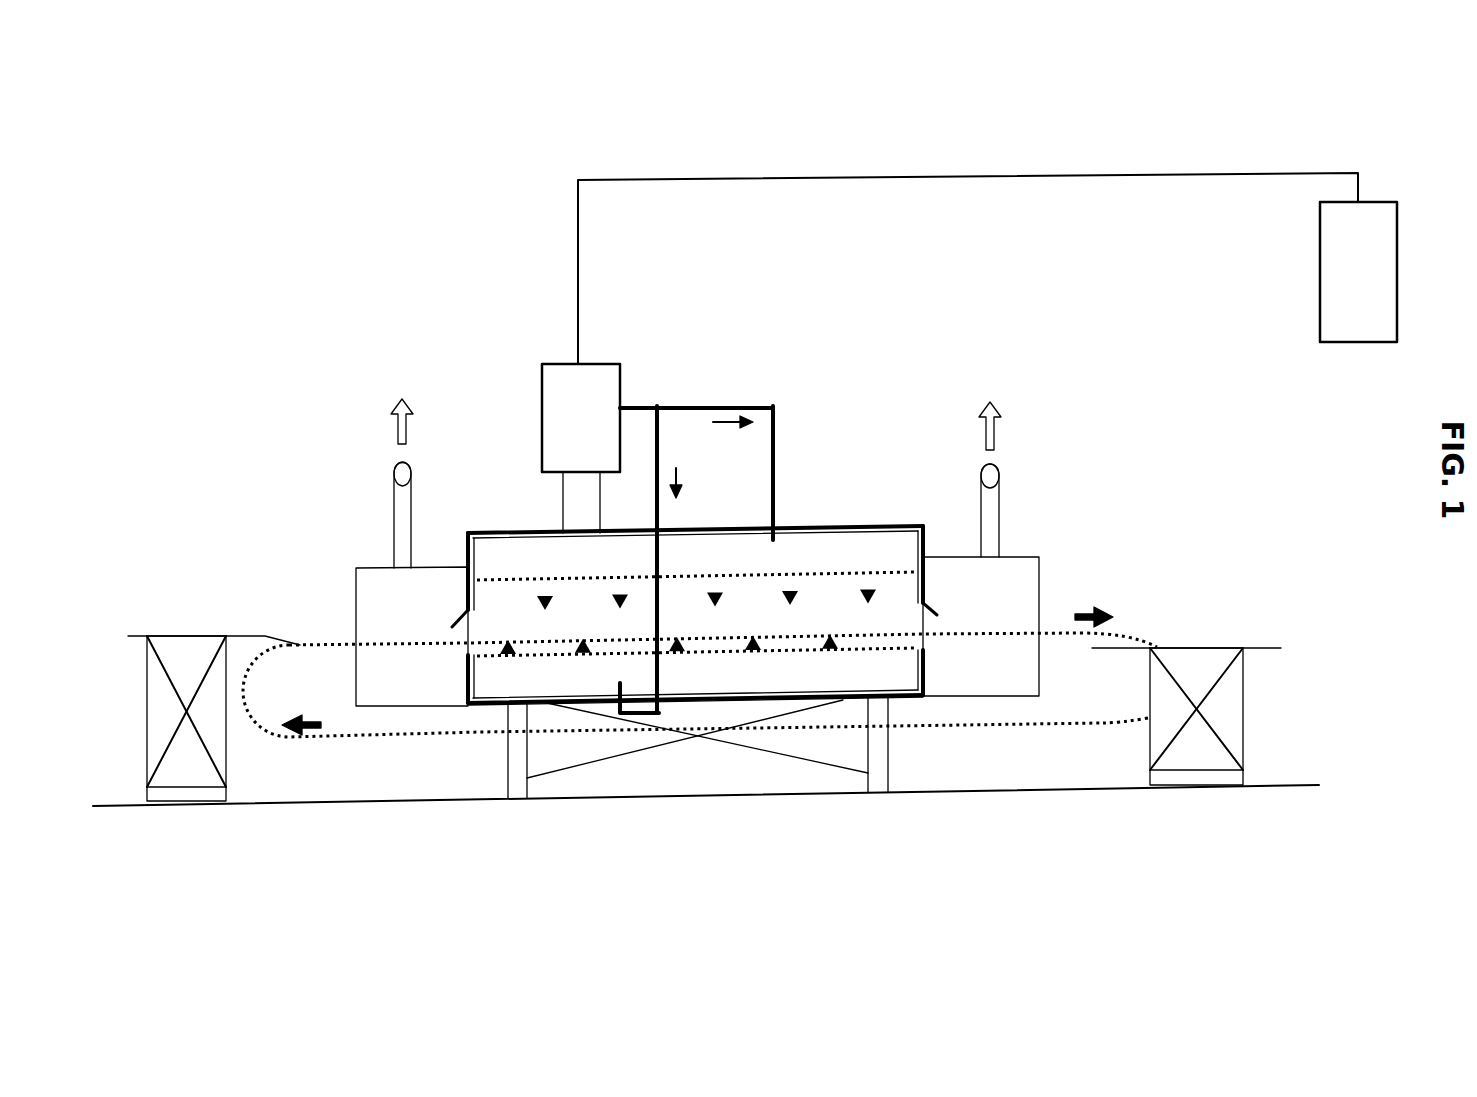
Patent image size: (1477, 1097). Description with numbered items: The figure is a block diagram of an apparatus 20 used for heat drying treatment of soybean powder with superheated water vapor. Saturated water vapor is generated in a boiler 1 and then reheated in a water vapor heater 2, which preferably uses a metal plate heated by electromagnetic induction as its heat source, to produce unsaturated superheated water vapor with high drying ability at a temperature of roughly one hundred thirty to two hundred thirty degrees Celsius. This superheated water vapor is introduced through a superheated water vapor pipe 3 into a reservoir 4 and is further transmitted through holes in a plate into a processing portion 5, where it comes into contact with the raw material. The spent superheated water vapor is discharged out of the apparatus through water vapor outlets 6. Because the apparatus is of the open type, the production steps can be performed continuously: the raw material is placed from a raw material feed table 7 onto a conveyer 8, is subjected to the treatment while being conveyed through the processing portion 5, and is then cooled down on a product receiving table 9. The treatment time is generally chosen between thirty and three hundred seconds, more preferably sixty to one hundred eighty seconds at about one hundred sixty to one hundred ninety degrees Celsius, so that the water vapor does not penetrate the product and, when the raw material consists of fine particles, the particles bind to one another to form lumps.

The apparatus 20 is at (665, 63).
The boiler 1 is at (1397, 240).
The water vapor heater 2 is at (620, 368).
The superheated water vapor pipe 3 is at (773, 425).
The reservoir 4 is at (803, 547).
The processing portion 5 is at (837, 588).
The water vapor outlets 6 is at (408, 500).
The raw material feed table 7 is at (205, 634).
The conveyer 8 is at (251, 712).
The product receiving table 9 is at (1230, 645).